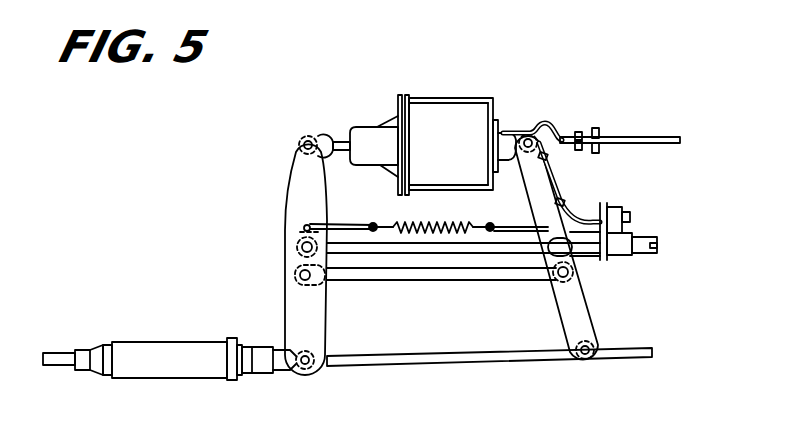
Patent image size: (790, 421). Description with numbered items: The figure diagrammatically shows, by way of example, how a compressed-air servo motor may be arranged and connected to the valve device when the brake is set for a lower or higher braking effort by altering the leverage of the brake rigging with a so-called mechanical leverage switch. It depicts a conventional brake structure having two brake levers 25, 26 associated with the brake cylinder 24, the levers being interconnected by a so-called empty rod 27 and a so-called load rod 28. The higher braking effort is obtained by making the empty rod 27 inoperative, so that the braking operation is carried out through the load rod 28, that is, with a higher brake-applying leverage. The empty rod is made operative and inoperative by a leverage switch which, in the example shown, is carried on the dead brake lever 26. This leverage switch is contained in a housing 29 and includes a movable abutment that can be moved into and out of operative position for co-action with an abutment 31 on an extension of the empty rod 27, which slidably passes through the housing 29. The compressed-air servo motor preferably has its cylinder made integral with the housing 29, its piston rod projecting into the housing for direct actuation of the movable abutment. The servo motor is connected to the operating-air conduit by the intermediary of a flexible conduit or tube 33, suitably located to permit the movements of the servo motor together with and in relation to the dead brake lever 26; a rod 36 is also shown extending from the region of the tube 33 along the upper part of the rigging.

The brake cylinder 24 is at (452, 112).
The brake lever 25 is at (303, 190).
The dead brake lever 26 is at (580, 308).
The empty rod 27 is at (393, 247).
The load rod 28 is at (463, 273).
The housing 29 is at (625, 233).
The abutment 31 is at (640, 252).
The flexible conduit or tube 33 is at (550, 177).
The control rod 36 is at (637, 140).